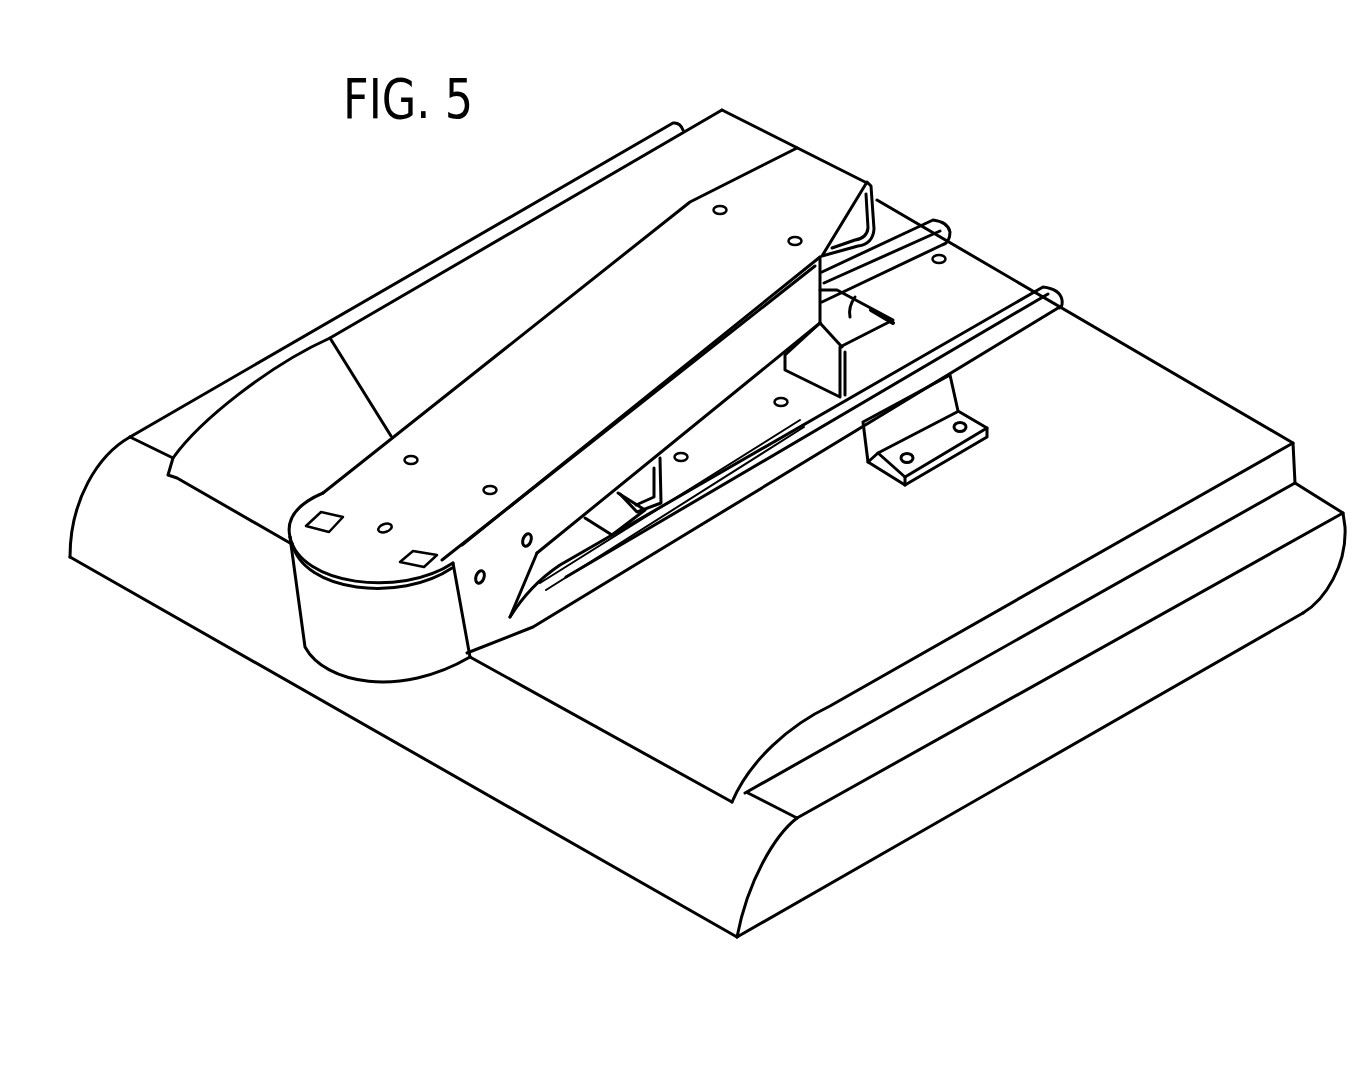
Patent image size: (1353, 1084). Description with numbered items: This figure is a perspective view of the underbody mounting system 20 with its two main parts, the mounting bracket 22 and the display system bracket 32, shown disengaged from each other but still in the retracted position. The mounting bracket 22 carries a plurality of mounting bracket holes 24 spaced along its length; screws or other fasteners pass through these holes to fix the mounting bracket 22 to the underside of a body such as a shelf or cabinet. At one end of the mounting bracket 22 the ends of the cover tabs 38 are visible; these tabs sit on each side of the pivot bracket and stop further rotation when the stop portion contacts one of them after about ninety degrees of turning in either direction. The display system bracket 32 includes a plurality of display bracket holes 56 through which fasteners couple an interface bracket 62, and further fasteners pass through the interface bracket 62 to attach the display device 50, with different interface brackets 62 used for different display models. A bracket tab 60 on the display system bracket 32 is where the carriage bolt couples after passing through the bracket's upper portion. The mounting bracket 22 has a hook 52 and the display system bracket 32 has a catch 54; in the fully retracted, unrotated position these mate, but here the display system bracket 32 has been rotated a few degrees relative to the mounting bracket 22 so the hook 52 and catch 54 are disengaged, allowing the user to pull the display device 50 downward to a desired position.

The underbody mounting system 20 is at (324, 714).
The mounting bracket 22 is at (607, 360).
The mounting bracket holes 24 is at (795, 237).
The display system bracket 32 is at (1007, 290).
The cover tab 38 is at (412, 548).
The display device 50 is at (990, 762).
The hook 52 is at (910, 218).
The catch 54 is at (951, 238).
The display bracket holes 56 is at (783, 405).
The bracket tab 60 is at (641, 508).
The interface bracket 62 is at (977, 420).